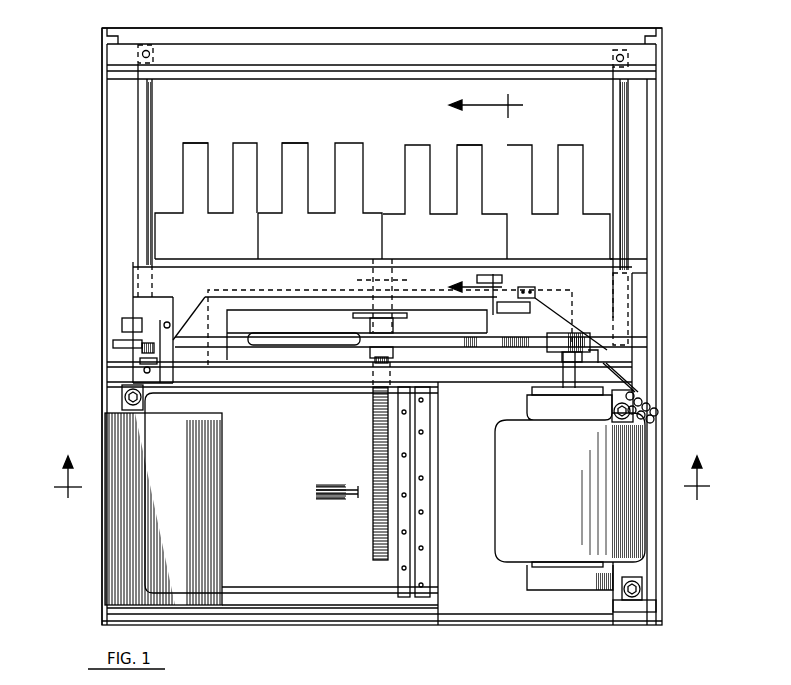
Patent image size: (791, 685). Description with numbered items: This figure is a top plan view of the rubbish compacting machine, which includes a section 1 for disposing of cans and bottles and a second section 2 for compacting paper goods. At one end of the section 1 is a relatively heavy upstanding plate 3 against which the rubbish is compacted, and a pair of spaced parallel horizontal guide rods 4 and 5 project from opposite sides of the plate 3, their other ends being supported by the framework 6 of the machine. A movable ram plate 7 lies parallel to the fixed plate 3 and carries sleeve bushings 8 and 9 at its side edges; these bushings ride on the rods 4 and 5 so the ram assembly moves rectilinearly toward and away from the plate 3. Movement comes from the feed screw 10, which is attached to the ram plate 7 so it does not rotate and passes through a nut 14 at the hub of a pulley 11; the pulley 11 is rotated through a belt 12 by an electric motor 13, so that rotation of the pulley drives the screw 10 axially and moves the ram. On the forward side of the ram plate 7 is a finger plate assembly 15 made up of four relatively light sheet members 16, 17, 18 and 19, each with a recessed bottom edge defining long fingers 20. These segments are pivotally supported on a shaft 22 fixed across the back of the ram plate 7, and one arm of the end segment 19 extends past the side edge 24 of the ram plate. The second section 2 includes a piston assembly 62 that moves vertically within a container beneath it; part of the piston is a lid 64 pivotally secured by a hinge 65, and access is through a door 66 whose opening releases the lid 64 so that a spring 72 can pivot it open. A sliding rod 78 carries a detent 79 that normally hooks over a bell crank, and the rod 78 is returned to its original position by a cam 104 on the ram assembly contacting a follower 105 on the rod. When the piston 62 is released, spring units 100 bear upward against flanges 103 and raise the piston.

The section for disposing of cans and bottles 1 is at (88, 160).
The second section for compacting paper goods 2 is at (58, 516).
The upstanding plate 3 is at (425, 78).
The horizontal guide rod 4 is at (150, 122).
The horizontal guide rod 5 is at (616, 122).
The framework 6 is at (248, 382).
The movable ram plate 7 is at (376, 268).
The sleeve bushing 8 is at (133, 283).
The sleeve bushing 9 is at (634, 298).
The feed screw 10 is at (372, 437).
The pulley 11 is at (312, 333).
The belt 12 is at (463, 338).
The electric motor 13 is at (502, 445).
The nut 14 is at (392, 350).
The finger plate assembly 15 is at (505, 138).
The finger plate segment 16 is at (206, 201).
The finger plate segment 17 is at (320, 201).
The finger plate segment 18 is at (445, 202).
The end finger plate segment 19 is at (558, 202).
The fingers 20 is at (250, 142).
The shaft 22 is at (549, 318).
The side edge of the ram plate 24 is at (652, 276).
The piston assembly 62 is at (308, 491).
The lid 64 is at (310, 582).
The hinge 65 is at (432, 552).
The door 66 is at (105, 560).
The spring 72 is at (343, 498).
The rod 78 is at (262, 363).
The detent 79 is at (140, 353).
The spring unit 100 is at (112, 402).
The flange 103 is at (120, 390).
The cam 104 is at (167, 352).
The follower 105 is at (158, 362).